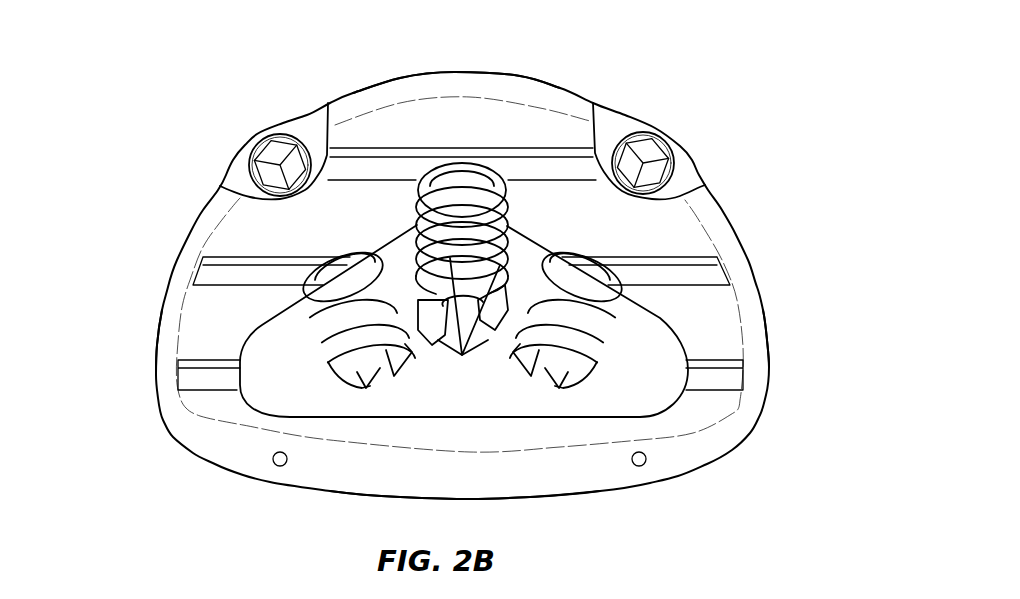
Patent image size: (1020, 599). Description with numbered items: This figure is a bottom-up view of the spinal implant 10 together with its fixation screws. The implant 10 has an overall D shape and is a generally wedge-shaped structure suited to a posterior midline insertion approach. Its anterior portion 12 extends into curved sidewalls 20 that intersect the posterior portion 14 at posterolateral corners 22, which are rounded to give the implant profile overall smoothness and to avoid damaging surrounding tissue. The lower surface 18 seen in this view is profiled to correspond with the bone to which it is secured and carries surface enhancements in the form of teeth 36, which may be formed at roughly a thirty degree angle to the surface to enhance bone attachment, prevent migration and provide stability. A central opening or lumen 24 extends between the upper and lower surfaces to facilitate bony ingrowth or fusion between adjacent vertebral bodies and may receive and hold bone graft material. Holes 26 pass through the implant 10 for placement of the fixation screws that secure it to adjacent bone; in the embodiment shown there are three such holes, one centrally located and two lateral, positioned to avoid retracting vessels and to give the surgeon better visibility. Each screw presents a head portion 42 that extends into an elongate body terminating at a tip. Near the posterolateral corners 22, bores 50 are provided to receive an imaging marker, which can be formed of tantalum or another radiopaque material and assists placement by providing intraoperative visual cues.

The spinal implant 10 is at (742, 79).
The anterior portion 12 is at (493, 72).
The posterior portion 14 is at (472, 498).
The lower surface 18 is at (208, 325).
The curved sidewalls 20 is at (173, 267).
The posterolateral corners 22 is at (170, 432).
The central opening or lumen 24 is at (647, 389).
The holes 26 is at (317, 118).
The teeth 36 is at (707, 275).
The head portion 42 is at (240, 167).
The bores 50 is at (276, 465).